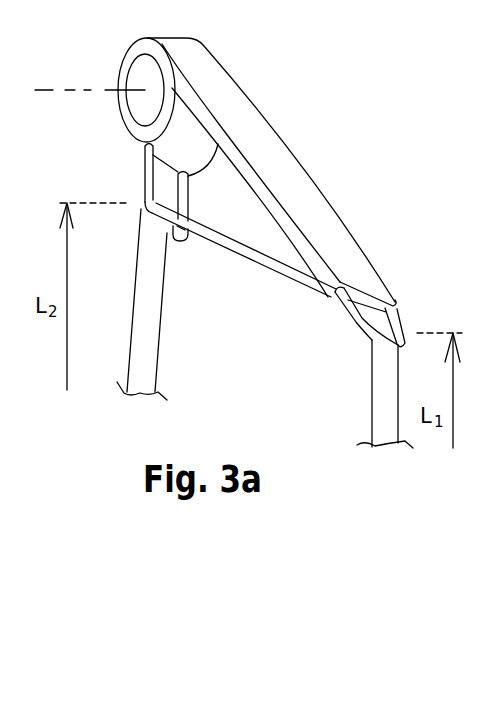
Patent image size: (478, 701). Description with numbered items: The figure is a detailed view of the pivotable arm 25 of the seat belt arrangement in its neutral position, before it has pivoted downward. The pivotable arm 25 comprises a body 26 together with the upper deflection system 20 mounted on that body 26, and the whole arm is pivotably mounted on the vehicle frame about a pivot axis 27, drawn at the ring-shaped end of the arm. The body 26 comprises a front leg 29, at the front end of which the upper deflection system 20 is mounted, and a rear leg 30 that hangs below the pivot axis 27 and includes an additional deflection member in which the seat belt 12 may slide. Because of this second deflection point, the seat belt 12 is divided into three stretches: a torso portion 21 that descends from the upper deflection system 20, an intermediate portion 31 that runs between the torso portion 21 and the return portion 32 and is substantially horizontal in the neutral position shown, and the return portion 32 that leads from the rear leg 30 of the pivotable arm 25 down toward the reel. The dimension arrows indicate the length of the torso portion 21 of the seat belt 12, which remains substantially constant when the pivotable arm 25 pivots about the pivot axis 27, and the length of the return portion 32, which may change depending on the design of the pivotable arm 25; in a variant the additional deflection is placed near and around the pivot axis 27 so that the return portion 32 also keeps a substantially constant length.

The seat belt 12 is at (368, 412).
The upper deflection system 20 is at (347, 331).
The torso portion 21 is at (388, 385).
The pivotable arm 25 is at (283, 63).
The body 26 is at (300, 133).
The pivot axis 27 is at (52, 90).
The front leg 29 is at (337, 247).
The rear leg 30 is at (143, 173).
The intermediate portion 31 is at (262, 272).
The return portion 32 is at (145, 330).